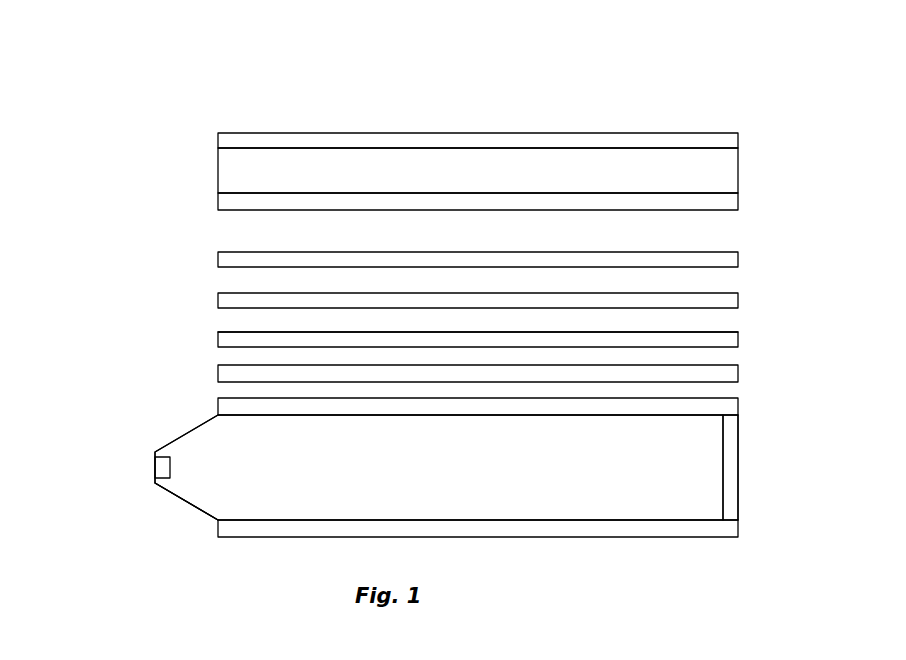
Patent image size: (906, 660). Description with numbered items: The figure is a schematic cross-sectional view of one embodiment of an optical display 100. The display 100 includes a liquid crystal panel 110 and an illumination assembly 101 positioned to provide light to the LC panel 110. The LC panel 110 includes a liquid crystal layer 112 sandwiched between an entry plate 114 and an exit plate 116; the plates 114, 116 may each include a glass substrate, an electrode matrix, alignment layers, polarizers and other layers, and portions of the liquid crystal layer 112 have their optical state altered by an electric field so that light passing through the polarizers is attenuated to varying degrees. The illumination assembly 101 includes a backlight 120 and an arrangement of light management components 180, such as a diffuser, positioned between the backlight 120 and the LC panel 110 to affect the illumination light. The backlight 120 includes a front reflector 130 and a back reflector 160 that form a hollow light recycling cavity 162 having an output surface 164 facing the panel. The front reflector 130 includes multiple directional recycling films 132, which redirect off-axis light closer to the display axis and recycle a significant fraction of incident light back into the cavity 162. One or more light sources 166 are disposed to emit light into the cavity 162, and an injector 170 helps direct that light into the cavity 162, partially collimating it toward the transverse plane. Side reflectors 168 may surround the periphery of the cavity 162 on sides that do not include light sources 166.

The optical display 100 is at (218, 92).
The illumination assembly 101 is at (79, 245).
The liquid crystal panel 110 is at (211, 133).
The liquid crystal layer 112 is at (732, 174).
The entry plate 114 is at (732, 203).
The exit plate 116 is at (732, 141).
The backlight 120 is at (137, 329).
The front reflector 130 is at (211, 331).
The directional recycling films 132 is at (732, 341).
The back reflector 160 is at (285, 530).
The hollow light recycling cavity 162 is at (392, 479).
The output surface 164 is at (718, 331).
The light sources 166 is at (162, 457).
The side reflectors 168 is at (730, 482).
The injector 170 is at (185, 500).
The light management components 180 is at (211, 252).